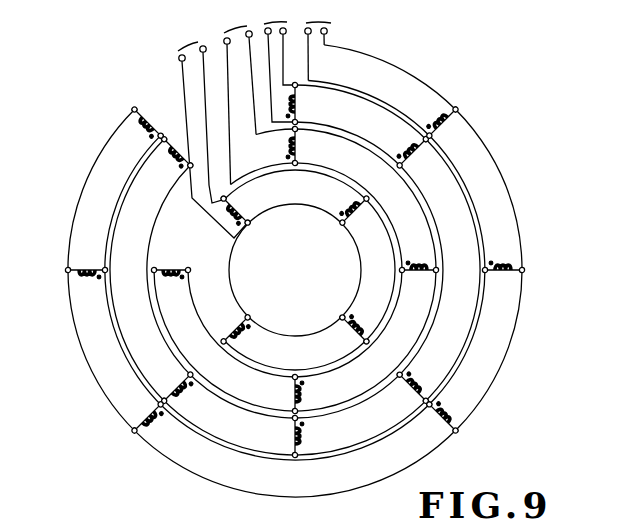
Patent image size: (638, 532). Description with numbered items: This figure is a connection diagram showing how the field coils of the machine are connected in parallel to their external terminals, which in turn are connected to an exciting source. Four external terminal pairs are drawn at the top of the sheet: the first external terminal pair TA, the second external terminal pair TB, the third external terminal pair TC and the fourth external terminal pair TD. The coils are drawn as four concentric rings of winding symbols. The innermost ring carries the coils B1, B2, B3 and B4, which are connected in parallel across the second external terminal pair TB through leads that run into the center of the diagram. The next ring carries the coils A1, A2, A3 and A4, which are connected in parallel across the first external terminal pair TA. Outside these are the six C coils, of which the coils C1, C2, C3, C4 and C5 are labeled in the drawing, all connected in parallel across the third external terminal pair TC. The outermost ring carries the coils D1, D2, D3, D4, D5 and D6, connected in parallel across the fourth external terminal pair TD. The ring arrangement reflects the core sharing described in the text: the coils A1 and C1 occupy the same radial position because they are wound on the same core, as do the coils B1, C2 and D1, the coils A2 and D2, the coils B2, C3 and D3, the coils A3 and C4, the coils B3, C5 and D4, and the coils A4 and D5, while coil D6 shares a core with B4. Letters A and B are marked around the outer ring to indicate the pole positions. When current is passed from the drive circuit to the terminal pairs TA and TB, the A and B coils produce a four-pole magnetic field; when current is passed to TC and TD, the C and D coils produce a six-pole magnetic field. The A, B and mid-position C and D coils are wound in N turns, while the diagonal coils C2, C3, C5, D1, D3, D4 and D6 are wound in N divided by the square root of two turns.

The first external terminal pair TA is at (240, 92).
The second external terminal pair TB is at (213, 126).
The third external terminal pair TC is at (279, 61).
The fourth external terminal pair TD is at (318, 40).
The coil A1 is at (302, 145).
The coil A2 is at (418, 256).
The coil A3 is at (305, 393).
The coil A4 is at (170, 282).
The coil B1 is at (353, 212).
The coil B2 is at (357, 323).
The coil B3 is at (238, 333).
The coil B4 is at (242, 208).
The coil C1 is at (302, 103).
The coil C2 is at (412, 152).
The coil C3 is at (415, 385).
The coil C4 is at (305, 436).
The coil C5 is at (178, 274).
The coil D1 is at (442, 122).
The coil D2 is at (503, 256).
The coil D3 is at (445, 413).
The coil D4 is at (150, 422).
The coil D5 is at (86, 282).
The coil D6 is at (145, 125).
The pole A node A is at (292, 293).
The pole B node B is at (297, 267).